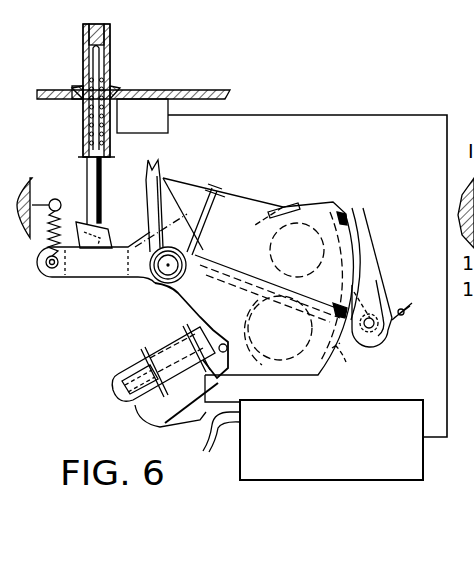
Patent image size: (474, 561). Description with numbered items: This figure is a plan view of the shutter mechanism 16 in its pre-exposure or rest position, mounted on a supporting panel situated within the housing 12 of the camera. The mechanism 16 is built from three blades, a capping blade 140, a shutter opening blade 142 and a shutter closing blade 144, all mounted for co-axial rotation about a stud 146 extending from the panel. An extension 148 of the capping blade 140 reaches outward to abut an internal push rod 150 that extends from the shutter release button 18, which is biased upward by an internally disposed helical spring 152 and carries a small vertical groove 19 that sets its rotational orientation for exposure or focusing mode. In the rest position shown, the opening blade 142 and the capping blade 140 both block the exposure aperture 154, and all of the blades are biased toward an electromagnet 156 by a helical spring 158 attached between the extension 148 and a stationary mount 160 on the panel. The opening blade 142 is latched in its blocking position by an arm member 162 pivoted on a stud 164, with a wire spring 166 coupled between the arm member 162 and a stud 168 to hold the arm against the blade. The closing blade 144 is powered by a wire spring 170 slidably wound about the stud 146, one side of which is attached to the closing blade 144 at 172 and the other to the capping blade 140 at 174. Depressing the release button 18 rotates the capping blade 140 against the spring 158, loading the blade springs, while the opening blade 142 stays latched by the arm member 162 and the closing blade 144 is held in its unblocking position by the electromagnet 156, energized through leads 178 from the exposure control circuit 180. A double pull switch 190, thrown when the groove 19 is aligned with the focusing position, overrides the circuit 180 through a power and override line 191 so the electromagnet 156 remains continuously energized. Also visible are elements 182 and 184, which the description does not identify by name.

The housing 12 is at (207, 93).
The shutter mechanism 16 is at (112, 392).
The shutter release button 18 is at (107, 25).
The vertical groove 19 is at (105, 55).
The capping blade 140 is at (298, 377).
The shutter opening blade 142 is at (318, 206).
The shutter closing blade 144 is at (273, 366).
The stud 146 is at (165, 270).
The extension 148 is at (85, 276).
The internal push rod 150 is at (90, 181).
The helical spring 152 is at (80, 88).
The exposure aperture 154 is at (339, 213).
The electromagnet 156 is at (158, 418).
The helical spring 158 is at (48, 238).
The stationary mount 160 is at (28, 178).
The arm member 162 is at (372, 246).
The stud 164 is at (371, 334).
The wire spring 166 is at (403, 310).
The stud 168 is at (403, 315).
The wire spring 170 is at (143, 266).
The attachment point 172 is at (148, 177).
The attachment point 174 is at (195, 210).
The leads 178 is at (218, 443).
The exposure control circuit 180 is at (416, 462).
The tab 182 is at (345, 352).
The contact strip 184 is at (275, 206).
The double pull switch 190 is at (140, 105).
The power and override line 191 is at (330, 115).